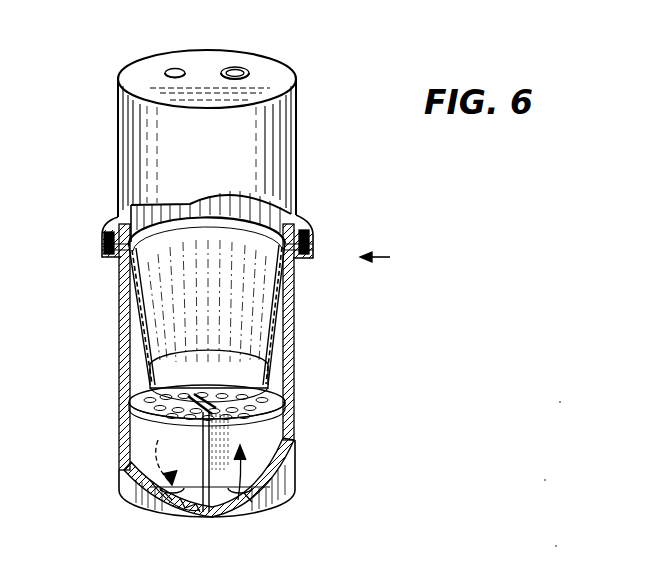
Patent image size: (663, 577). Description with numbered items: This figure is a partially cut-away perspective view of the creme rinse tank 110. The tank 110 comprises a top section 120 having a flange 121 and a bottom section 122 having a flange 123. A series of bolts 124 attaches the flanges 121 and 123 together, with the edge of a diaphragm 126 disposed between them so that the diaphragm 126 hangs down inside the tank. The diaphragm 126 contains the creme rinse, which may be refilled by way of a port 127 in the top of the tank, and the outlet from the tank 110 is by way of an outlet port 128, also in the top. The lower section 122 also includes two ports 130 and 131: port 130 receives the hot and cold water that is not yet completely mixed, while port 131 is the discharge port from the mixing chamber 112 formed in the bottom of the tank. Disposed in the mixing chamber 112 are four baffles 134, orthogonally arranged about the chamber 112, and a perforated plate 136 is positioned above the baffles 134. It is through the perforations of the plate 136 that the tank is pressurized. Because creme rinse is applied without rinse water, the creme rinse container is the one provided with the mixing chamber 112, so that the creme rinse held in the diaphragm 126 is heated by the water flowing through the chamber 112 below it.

The tank 110 is at (393, 257).
The mixing chamber 112 is at (265, 435).
The top section 120 is at (285, 150).
The flange 121 is at (301, 222).
The bottom section 122 is at (292, 342).
The flange 123 is at (310, 252).
The bolts 124 is at (310, 239).
The diaphragm 126 is at (141, 336).
The port 127 is at (241, 68).
The outlet port 128 is at (174, 67).
The port 130 is at (245, 512).
The port 131 is at (185, 505).
The baffles 134 is at (148, 428).
The perforated plate 136 is at (138, 407).